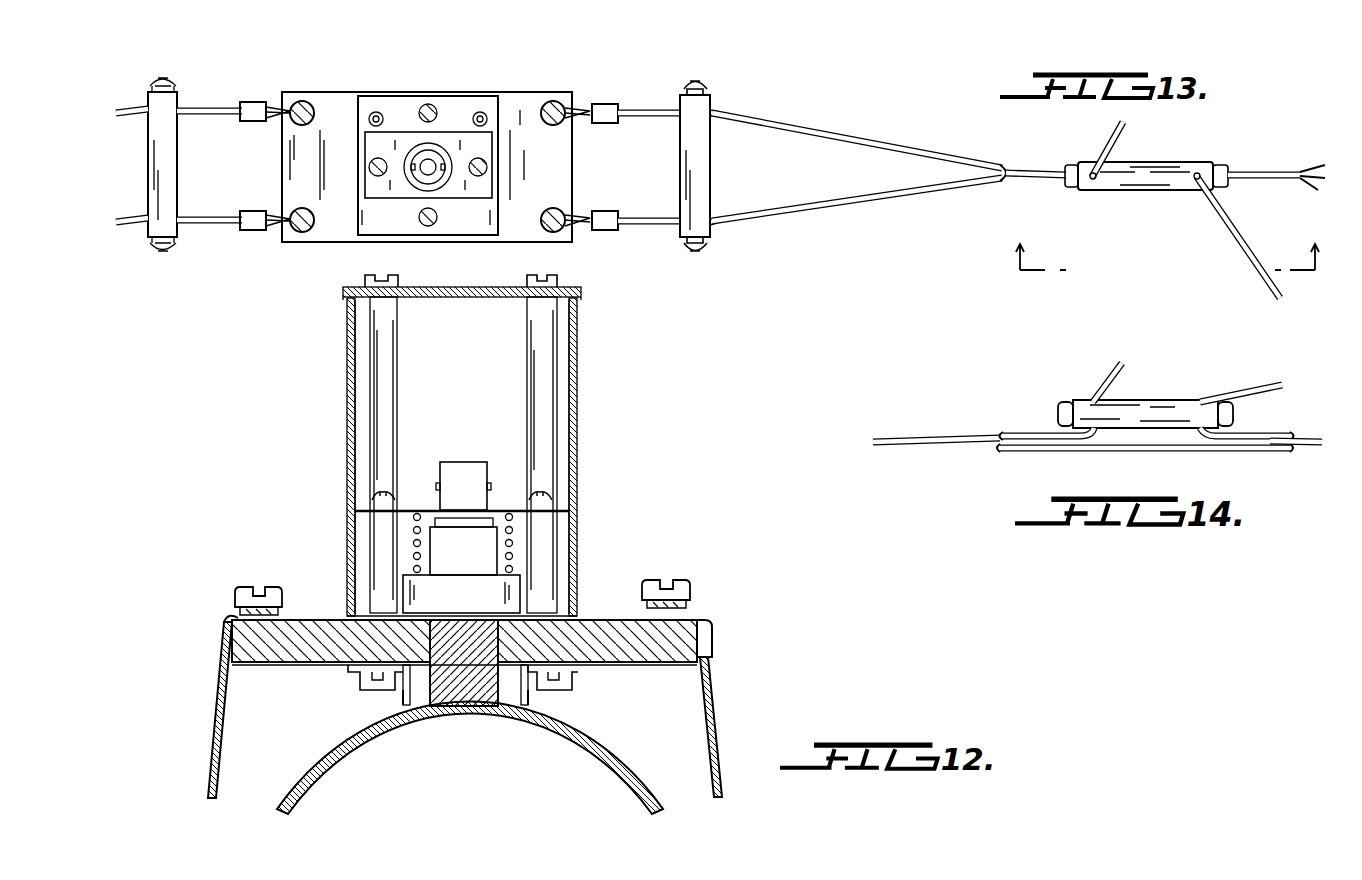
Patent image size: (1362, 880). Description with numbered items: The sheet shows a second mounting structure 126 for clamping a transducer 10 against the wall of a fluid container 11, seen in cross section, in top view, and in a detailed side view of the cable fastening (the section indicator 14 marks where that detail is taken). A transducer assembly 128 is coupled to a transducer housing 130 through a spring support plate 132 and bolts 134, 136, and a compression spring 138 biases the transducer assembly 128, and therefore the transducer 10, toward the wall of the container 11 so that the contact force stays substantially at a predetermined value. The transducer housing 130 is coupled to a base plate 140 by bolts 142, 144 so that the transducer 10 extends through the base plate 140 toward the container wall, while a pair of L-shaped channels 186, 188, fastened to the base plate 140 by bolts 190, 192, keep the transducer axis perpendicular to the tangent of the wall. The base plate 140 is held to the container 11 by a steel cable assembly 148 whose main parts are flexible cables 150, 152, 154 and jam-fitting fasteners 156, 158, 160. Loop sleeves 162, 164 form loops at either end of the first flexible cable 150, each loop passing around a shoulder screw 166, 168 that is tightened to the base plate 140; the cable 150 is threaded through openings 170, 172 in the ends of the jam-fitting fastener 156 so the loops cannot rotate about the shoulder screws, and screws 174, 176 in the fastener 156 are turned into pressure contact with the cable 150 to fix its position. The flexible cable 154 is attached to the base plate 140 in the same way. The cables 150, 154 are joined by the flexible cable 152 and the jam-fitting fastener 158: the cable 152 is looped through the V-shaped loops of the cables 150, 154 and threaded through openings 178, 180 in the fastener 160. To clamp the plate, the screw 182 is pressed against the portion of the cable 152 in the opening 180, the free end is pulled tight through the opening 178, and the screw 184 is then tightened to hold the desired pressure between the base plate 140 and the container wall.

In FIG. 12, the transducer 10 is at (465, 692).
In FIG. 12, the container 11 is at (345, 792).
In FIG. 13, the section line 14 is at (1167, 236).
In FIG. 12, the second mounting structure 126 is at (228, 578).
In FIG. 12, the transducer assembly 128 is at (410, 598).
In FIG. 12, the transducer housing 130 is at (578, 432).
In FIG. 12, the spring support plate 132 is at (413, 500).
In FIG. 12, the bolt 134 is at (370, 498).
In FIG. 12, the bolt 136 is at (554, 496).
In FIG. 12, the compression spring 138 is at (413, 545).
In FIG. 13, the base plate 140 is at (340, 95).
In FIG. 12, the base plate 140 is at (600, 640).
In FIG. 12, the bolt 142 is at (366, 278).
In FIG. 12, the bolt 144 is at (558, 278).
In FIG. 13, the steel cable assembly 148 is at (1179, 198).
In FIG. 13, the first flexible cable 150 is at (905, 146).
In FIG. 14, the first flexible cable 150 is at (980, 432).
In FIG. 12, the first flexible cable 150 is at (715, 705).
In FIG. 13, the flexible cable 152 is at (1038, 170).
In FIG. 14, the flexible cable 152 is at (1108, 452).
In FIG. 13, the flexible cable 154 is at (215, 96).
In FIG. 14, the flexible cable 154 is at (1305, 445).
In FIG. 12, the flexible cable 154 is at (222, 706).
In FIG. 13, the jam-fitting fastener 156 is at (712, 178).
In FIG. 13, the jam-fitting fastener 158 is at (1165, 150).
In FIG. 13, the jam-fitting fastener 160 is at (177, 170).
In FIG. 14, the jam-fitting fastener 160 is at (1163, 398).
In FIG. 13, the loop sleeve 162 is at (606, 218).
In FIG. 13, the loop sleeve 164 is at (604, 124).
In FIG. 12, the loop sleeve 164 is at (712, 642).
In FIG. 13, the shoulder screw 166 is at (550, 210).
In FIG. 12, the shoulder screw 166 is at (690, 587).
In FIG. 13, the shoulder screw 168 is at (556, 127).
In FIG. 13, the opening 170 is at (713, 218).
In FIG. 13, the opening 172 is at (713, 117).
In FIG. 13, the screw 174 is at (707, 246).
In FIG. 13, the screw 176 is at (708, 85).
In FIG. 13, the opening 178 is at (1098, 186).
In FIG. 14, the opening 178 is at (1088, 398).
In FIG. 13, the opening 180 is at (1192, 188).
In FIG. 14, the opening 180 is at (1204, 398).
In FIG. 14, the screw 182 is at (1233, 413).
In FIG. 14, the screw 184 is at (1058, 410).
In FIG. 12, the L-shaped channel 186 is at (403, 695).
In FIG. 12, the L-shaped channel 188 is at (530, 697).
In FIG. 12, the bolt 190 is at (358, 678).
In FIG. 12, the bolt 192 is at (573, 678).